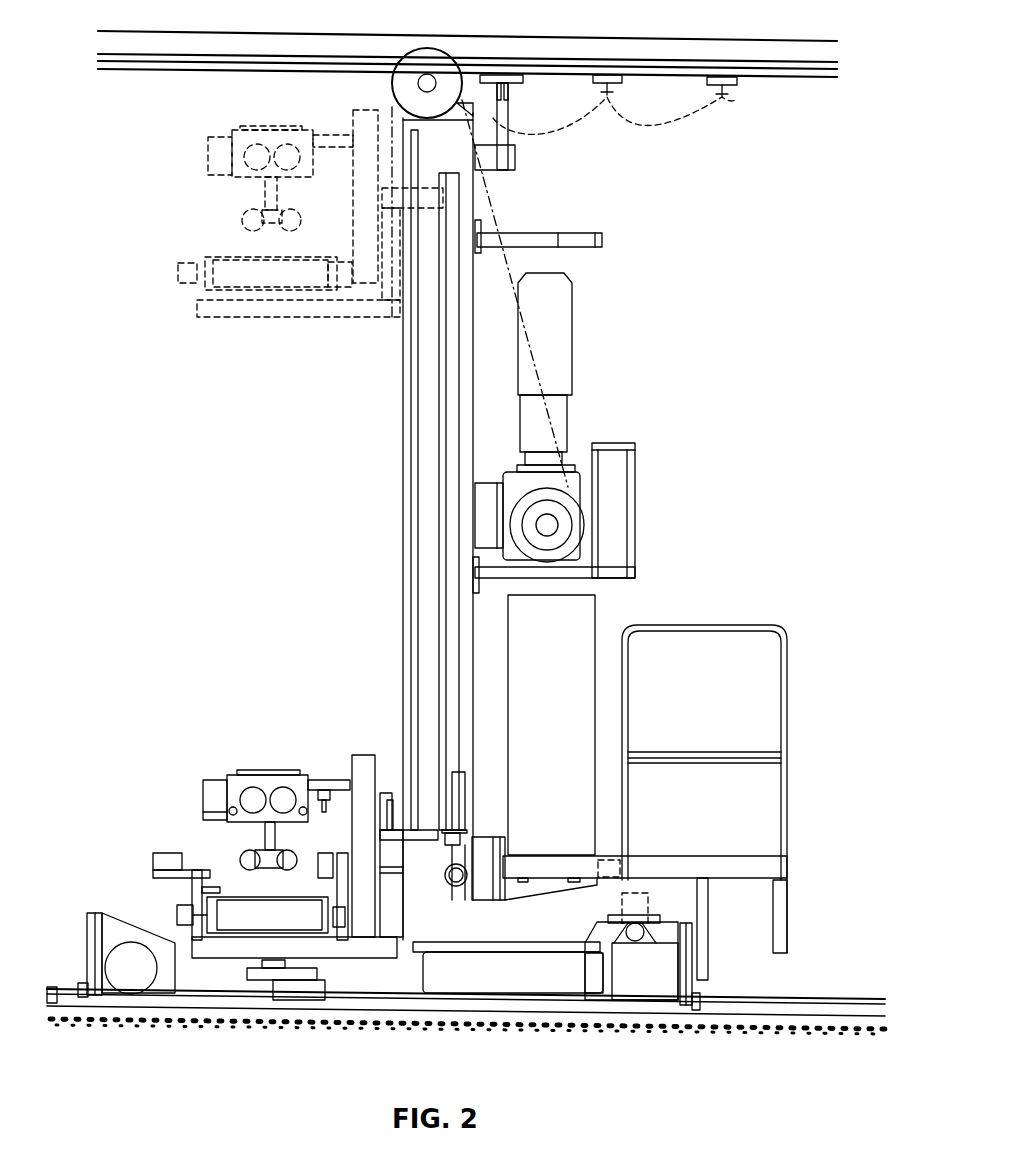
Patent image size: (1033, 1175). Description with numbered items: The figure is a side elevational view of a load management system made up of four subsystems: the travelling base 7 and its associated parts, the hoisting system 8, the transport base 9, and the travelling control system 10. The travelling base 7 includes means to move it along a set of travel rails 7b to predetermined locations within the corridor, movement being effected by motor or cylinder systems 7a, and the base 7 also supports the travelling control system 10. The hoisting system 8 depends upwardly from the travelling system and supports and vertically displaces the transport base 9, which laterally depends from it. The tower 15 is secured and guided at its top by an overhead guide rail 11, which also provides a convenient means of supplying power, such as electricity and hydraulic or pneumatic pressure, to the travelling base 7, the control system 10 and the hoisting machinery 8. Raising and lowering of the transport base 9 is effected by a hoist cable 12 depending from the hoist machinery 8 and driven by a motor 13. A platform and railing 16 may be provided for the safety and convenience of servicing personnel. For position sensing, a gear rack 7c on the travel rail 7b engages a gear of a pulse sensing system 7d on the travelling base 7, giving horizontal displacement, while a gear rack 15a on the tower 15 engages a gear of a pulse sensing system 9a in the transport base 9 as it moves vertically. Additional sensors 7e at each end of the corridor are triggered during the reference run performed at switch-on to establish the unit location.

The travelling base 7 is at (104, 861).
The motor or cylinder systems 7a is at (632, 907).
The travel rails 7b is at (753, 1003).
The gear rack 7c is at (840, 997).
The pulse sensing system 7d is at (277, 987).
The additional sensors 7e is at (49, 988).
The hoisting system 8 is at (632, 490).
The transport base 9 is at (214, 322).
The pulse sensing system 9a is at (428, 198).
The travelling control system 10 is at (577, 630).
The overhead guide rail 11 is at (670, 72).
The hoist cable 12 is at (498, 202).
The motor 13 is at (555, 348).
The tower 15 is at (440, 545).
The gear rack 15a is at (412, 460).
The platform and railing 16 is at (762, 627).